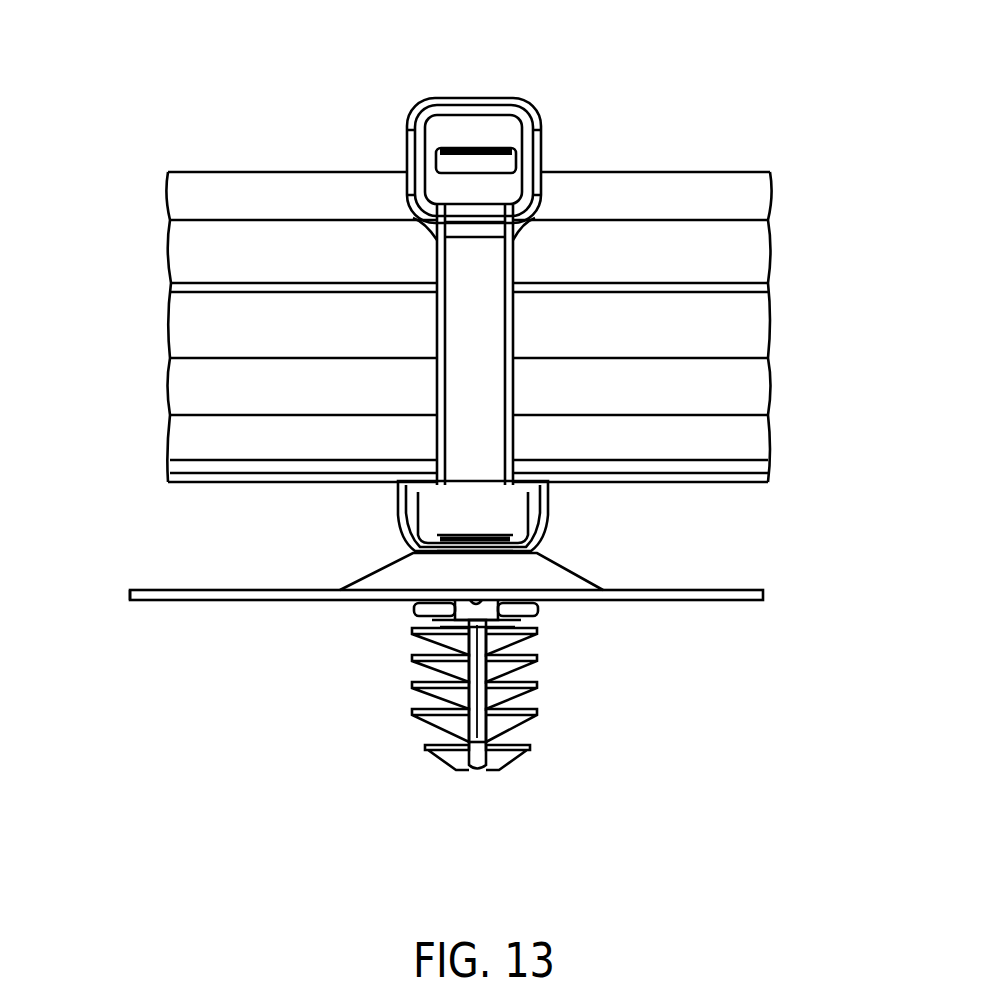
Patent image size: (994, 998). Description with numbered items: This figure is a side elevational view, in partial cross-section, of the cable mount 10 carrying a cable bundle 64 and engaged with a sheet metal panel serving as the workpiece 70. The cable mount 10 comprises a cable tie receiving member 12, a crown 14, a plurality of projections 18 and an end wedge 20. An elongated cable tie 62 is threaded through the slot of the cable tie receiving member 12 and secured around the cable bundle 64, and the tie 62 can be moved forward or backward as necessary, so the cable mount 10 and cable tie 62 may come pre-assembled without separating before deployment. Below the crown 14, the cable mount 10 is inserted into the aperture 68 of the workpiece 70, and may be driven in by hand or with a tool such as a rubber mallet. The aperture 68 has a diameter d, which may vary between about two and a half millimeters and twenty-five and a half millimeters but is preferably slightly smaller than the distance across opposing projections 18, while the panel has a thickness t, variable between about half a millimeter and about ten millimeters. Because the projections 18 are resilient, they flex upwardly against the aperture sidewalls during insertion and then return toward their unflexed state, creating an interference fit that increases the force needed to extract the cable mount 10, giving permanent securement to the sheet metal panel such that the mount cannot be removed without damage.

The cable mount 10 is at (645, 517).
The cable tie receiving member 12 is at (400, 509).
The crown 14 is at (365, 571).
The plurality of projections 18 is at (572, 718).
The end wedge 20 is at (503, 773).
The cable tie 62 is at (515, 258).
The cable bundle 64 is at (713, 192).
The aperture 68 is at (538, 603).
The workpiece 70 is at (763, 596).
The thickness t is at (128, 596).
The diameter d is at (457, 642).